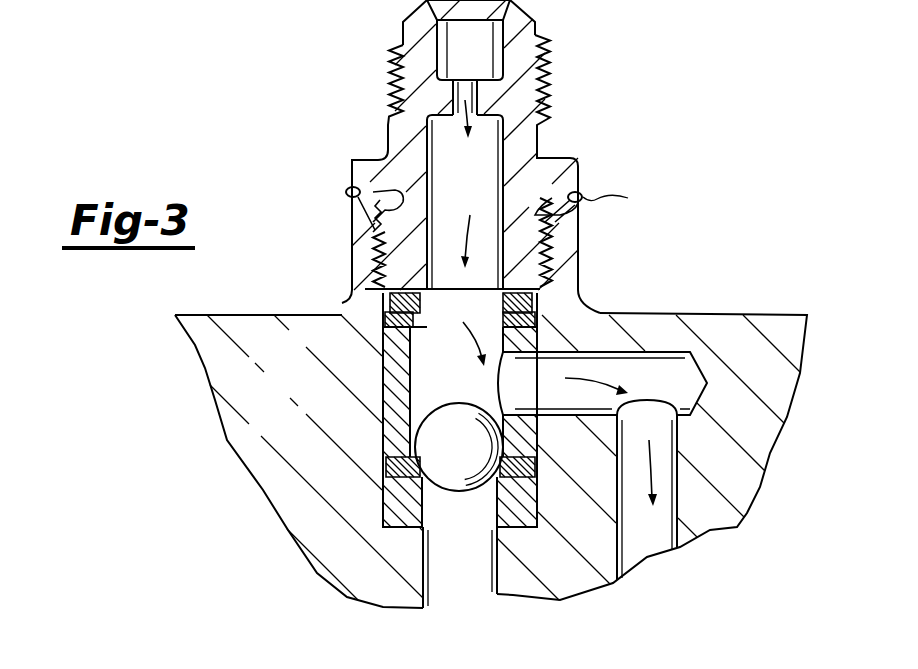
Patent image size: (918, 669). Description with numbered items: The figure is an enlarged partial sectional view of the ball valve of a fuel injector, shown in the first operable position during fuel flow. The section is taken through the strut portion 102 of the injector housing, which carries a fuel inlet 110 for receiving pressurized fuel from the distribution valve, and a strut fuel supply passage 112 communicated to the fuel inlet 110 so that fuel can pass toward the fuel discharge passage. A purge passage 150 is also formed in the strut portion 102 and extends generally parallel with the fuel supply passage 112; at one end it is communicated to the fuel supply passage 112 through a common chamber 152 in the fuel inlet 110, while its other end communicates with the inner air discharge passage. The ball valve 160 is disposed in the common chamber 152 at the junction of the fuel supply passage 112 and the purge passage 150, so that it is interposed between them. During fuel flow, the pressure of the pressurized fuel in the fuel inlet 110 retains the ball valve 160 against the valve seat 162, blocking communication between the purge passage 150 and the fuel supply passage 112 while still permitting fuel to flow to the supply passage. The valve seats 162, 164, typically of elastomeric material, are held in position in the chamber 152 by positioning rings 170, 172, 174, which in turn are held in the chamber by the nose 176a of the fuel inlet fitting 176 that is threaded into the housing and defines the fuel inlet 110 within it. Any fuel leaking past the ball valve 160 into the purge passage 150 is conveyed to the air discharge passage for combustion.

The strut portion 102 is at (735, 490).
The fuel inlet 110 is at (490, 135).
The strut fuel supply passage 112 is at (642, 365).
The purge passage 150 is at (468, 588).
The common chamber 152 is at (452, 400).
The ball valve 160 is at (430, 438).
The valve seat 162 is at (392, 463).
The valve seat 164 is at (387, 315).
The positioning ring 170 is at (385, 302).
The positioning ring 172 is at (388, 378).
The positioning ring 174 is at (383, 527).
The fuel inlet fitting 176 is at (537, 156).
The nose 176a is at (380, 233).